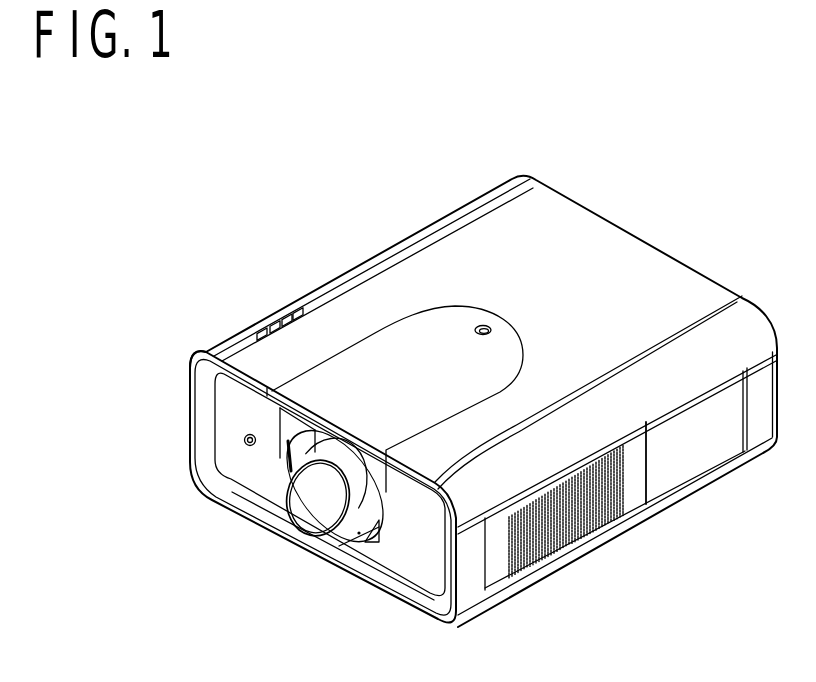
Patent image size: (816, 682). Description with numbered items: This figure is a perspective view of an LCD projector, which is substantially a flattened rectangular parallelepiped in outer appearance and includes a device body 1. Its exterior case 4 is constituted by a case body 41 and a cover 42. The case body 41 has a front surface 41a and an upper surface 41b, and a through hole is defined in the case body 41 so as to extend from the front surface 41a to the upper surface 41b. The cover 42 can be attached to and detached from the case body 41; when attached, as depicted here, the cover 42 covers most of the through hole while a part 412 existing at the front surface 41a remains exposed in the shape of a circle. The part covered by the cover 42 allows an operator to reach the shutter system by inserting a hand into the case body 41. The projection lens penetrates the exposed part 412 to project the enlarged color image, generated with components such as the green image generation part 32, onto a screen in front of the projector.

The device body 1 is at (471, 190).
The case 4 is at (297, 188).
The case body 41 is at (413, 290).
The cover 42 is at (357, 386).
The front surface 41a is at (393, 554).
The upper surface 41b is at (573, 349).
The green image generation part 32 is at (327, 518).
The part of the through hole 412 is at (377, 524).